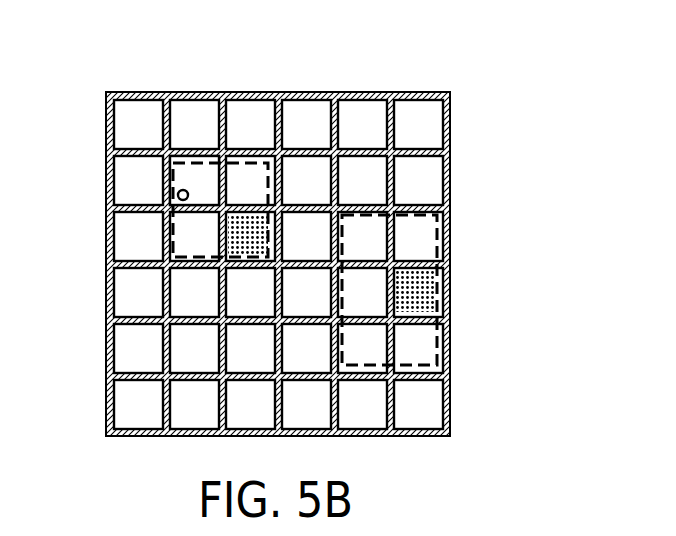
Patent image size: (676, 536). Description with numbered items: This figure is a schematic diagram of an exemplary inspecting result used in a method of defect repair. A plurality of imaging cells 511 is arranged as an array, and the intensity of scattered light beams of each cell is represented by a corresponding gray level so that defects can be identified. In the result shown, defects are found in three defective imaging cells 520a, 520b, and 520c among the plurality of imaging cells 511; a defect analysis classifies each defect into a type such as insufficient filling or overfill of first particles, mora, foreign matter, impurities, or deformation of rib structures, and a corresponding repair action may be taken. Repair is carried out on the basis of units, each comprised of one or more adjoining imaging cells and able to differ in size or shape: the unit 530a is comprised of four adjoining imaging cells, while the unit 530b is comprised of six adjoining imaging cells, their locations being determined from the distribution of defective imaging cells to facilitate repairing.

The imaging cells 511 is at (416, 122).
The defective imaging cell 520a is at (435, 298).
The defective imaging cell 520b is at (253, 230).
The defective imaging cell 520c is at (203, 178).
The unit 530a is at (170, 223).
The unit 530b is at (435, 343).